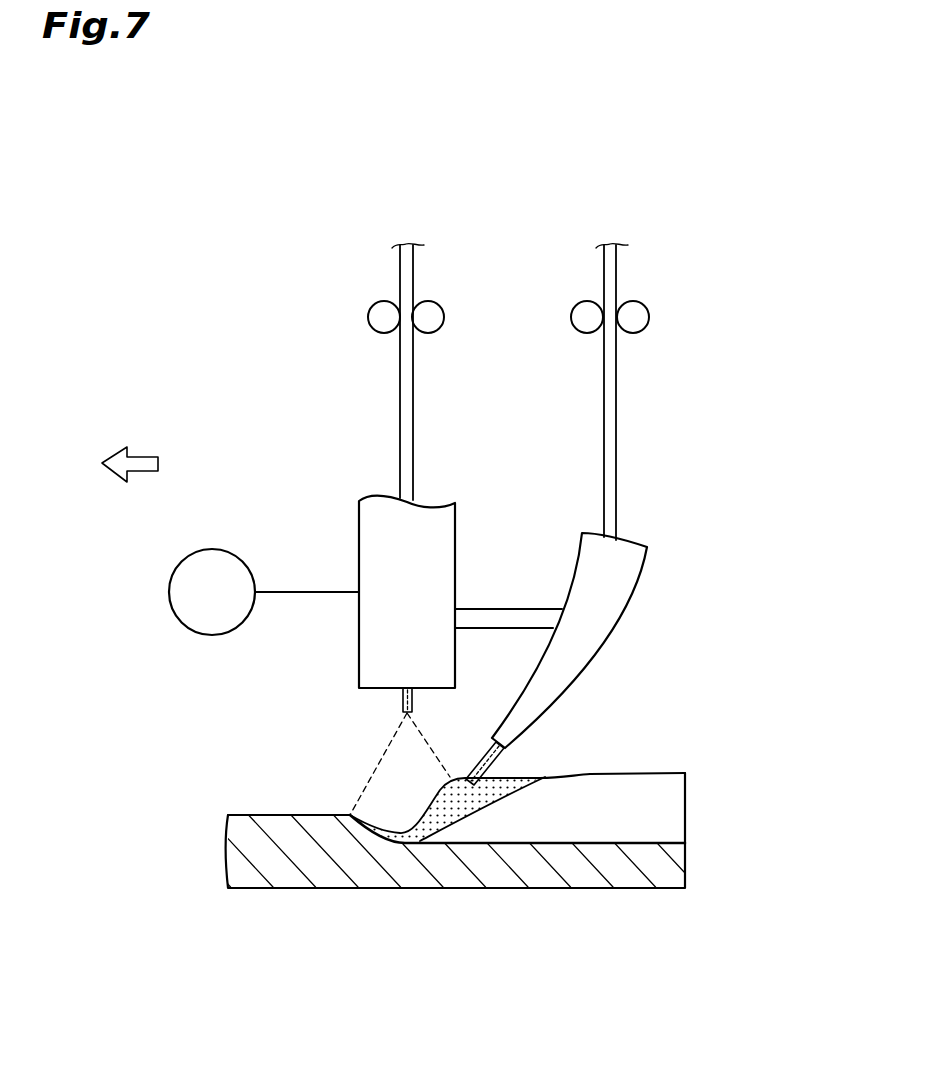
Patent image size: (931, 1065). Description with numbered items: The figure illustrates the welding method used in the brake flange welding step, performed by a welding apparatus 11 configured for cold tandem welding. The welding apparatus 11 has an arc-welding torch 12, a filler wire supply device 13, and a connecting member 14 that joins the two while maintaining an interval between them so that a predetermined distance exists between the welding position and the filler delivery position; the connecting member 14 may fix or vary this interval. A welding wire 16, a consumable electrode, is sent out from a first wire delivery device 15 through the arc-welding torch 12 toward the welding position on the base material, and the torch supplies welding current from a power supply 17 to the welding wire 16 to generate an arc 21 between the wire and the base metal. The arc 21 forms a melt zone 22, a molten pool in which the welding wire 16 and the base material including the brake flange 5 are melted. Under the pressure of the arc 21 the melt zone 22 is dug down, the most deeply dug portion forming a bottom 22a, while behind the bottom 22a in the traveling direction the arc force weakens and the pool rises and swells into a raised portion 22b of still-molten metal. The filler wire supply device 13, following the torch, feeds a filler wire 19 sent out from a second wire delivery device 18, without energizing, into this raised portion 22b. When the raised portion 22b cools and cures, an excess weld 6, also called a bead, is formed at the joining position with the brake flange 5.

The welding apparatus 11 is at (748, 352).
The arc-welding torch 12 is at (358, 536).
The filler wire supply device 13 is at (627, 600).
The connecting member 14 is at (501, 607).
The first wire delivery device 15 is at (367, 320).
The welding wire 16 is at (400, 420).
The power supply 17 is at (207, 548).
The second wire delivery device 18 is at (649, 318).
The filler wire 19 is at (618, 421).
The arc 21 is at (375, 768).
The melt zone 22 is at (418, 828).
The bottom of the melt zone 22a is at (389, 830).
The raised portion 22b is at (452, 775).
The brake flange 5 is at (270, 877).
The excess weld 6 is at (642, 778).